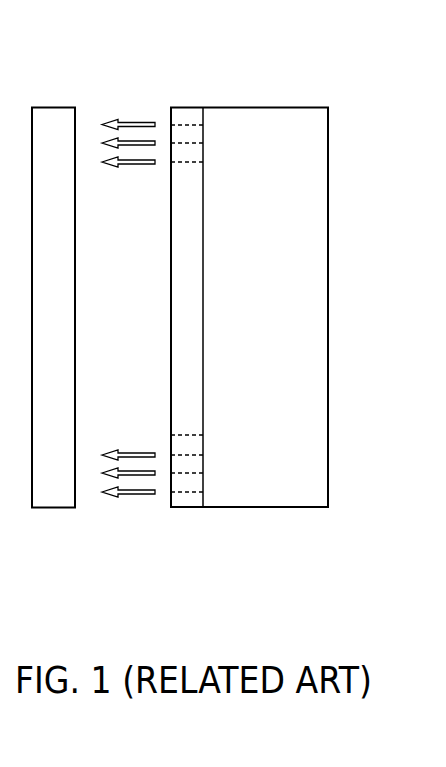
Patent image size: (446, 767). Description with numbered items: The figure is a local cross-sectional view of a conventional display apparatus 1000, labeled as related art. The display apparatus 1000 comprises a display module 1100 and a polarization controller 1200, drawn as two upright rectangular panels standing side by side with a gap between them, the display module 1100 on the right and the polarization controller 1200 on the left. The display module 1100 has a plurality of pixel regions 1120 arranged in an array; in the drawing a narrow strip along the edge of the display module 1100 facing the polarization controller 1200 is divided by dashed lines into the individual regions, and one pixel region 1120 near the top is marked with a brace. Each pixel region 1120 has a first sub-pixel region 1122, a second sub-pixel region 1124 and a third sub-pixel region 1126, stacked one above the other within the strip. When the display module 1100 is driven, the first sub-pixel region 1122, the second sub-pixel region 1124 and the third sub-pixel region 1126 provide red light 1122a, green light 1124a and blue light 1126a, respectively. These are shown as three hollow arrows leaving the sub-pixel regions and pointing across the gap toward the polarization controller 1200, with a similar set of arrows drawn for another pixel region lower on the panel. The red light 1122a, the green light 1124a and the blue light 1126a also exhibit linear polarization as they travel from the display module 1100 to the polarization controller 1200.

The display apparatus 1000 is at (382, 584).
The display module 1100 is at (328, 524).
The polarization controller 1200 is at (75, 524).
The pixel region 1120 is at (212, 110).
The first sub-pixel region 1122 is at (195, 115).
The second sub-pixel region 1124 is at (182, 131).
The third sub-pixel region 1126 is at (190, 152).
The red light 1122a is at (135, 122).
The green light 1124a is at (106, 142).
The blue light 1126a is at (138, 165).